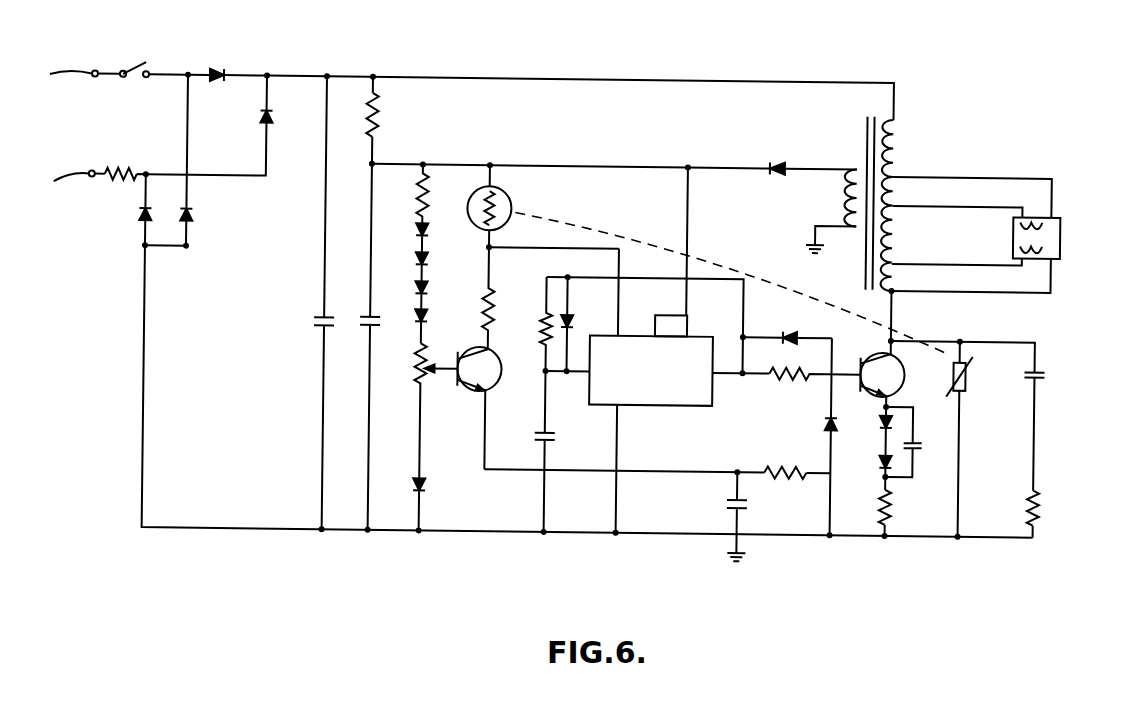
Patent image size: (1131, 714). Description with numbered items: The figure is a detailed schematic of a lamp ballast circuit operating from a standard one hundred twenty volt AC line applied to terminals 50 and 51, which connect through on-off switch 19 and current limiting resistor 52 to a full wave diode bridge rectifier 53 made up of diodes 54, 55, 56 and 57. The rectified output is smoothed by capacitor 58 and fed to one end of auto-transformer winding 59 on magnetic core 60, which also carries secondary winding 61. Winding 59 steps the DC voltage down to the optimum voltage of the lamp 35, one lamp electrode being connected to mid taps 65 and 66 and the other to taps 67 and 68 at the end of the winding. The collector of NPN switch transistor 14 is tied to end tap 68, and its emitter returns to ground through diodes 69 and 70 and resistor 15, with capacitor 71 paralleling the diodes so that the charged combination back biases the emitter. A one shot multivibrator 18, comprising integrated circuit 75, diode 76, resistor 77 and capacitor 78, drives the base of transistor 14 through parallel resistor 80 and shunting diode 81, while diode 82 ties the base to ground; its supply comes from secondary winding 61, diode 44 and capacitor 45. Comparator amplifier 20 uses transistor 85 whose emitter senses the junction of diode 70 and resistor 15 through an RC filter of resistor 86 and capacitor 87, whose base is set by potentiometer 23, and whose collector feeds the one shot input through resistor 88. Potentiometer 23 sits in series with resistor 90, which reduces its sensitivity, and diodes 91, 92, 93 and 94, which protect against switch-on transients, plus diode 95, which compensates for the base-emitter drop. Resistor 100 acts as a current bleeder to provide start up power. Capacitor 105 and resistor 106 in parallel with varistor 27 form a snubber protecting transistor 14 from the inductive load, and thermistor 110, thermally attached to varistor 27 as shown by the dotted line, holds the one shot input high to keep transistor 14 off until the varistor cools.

The NPN switch transistor 14 is at (902, 352).
The resistor 15 is at (888, 497).
The one shot multivibrator 18 is at (700, 322).
The on-off switch 19 is at (145, 62).
The comparator amplifier 20 is at (499, 384).
The potentiometer 23 is at (421, 381).
The varistor 27 is at (969, 377).
The lamp 35 is at (1062, 227).
The diode 44 is at (780, 156).
The capacitor 45 is at (372, 323).
The terminal 50 is at (62, 180).
The terminal 51 is at (59, 73).
The current limiting resistor 52 is at (135, 170).
The full wave diode bridge rectifier 53 is at (204, 126).
The diode 54 is at (218, 66).
The diode 55 is at (270, 124).
The diode 56 is at (141, 218).
The diode 57 is at (194, 218).
The wave smoothing capacitor 58 is at (318, 323).
The auto-transformer winding 59 is at (902, 134).
The magnetic core 60 is at (868, 107).
The secondary winding 61 is at (846, 190).
The mid tap 65 is at (897, 163).
The mid tap 66 is at (897, 199).
The tap 67 is at (898, 253).
The end tap 68 is at (896, 283).
The diode 69 is at (888, 416).
The diode 70 is at (888, 442).
The capacitor 71 is at (918, 437).
The integrated circuit 75 is at (666, 399).
The diode 76 is at (573, 308).
The resistor 77 is at (546, 307).
The capacitor 78 is at (560, 431).
The resistor 80 is at (780, 371).
The diode 81 is at (794, 323).
The diode 82 is at (830, 416).
The transistor 85 is at (497, 349).
The resistor 86 is at (774, 462).
The capacitor 87 is at (737, 496).
The resistor 88 is at (485, 294).
The resistor 90 is at (418, 186).
The diode 91 is at (418, 227).
The diode 92 is at (418, 256).
The diode 93 is at (418, 284).
The diode 94 is at (418, 311).
The diode 95 is at (419, 474).
The current bleeder resistor 100 is at (377, 113).
The capacitor 105 is at (1049, 360).
The resistor 106 is at (1047, 491).
The thermistor 110 is at (514, 203).